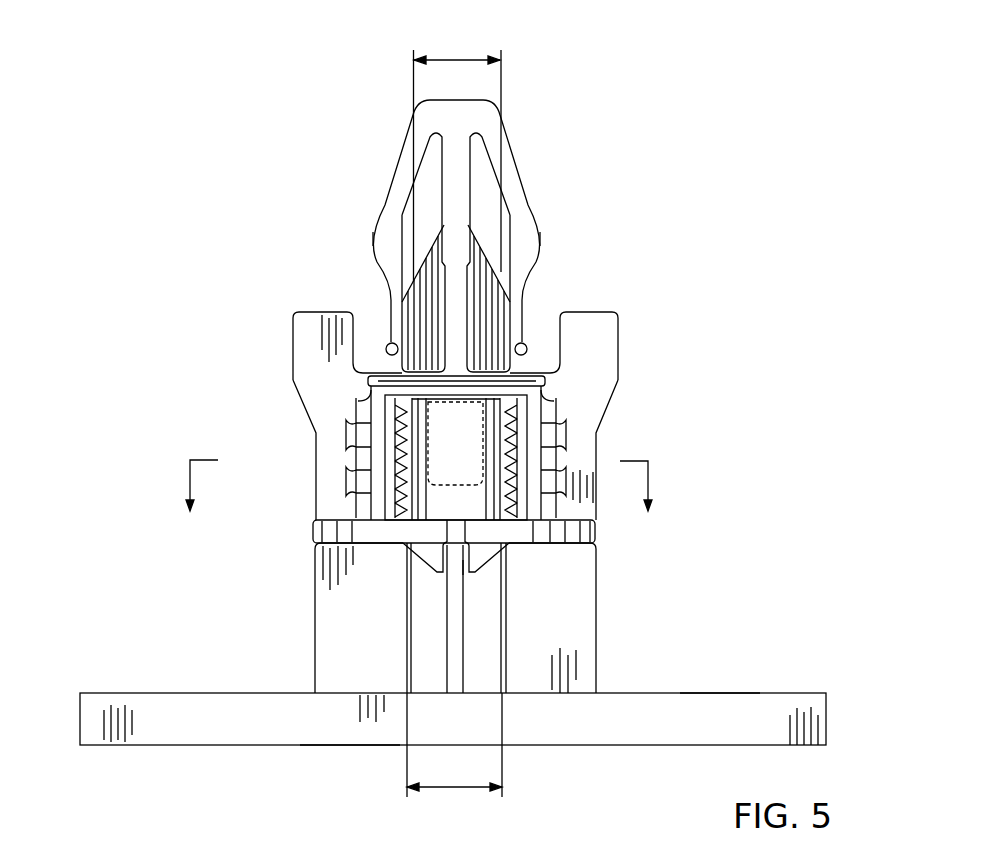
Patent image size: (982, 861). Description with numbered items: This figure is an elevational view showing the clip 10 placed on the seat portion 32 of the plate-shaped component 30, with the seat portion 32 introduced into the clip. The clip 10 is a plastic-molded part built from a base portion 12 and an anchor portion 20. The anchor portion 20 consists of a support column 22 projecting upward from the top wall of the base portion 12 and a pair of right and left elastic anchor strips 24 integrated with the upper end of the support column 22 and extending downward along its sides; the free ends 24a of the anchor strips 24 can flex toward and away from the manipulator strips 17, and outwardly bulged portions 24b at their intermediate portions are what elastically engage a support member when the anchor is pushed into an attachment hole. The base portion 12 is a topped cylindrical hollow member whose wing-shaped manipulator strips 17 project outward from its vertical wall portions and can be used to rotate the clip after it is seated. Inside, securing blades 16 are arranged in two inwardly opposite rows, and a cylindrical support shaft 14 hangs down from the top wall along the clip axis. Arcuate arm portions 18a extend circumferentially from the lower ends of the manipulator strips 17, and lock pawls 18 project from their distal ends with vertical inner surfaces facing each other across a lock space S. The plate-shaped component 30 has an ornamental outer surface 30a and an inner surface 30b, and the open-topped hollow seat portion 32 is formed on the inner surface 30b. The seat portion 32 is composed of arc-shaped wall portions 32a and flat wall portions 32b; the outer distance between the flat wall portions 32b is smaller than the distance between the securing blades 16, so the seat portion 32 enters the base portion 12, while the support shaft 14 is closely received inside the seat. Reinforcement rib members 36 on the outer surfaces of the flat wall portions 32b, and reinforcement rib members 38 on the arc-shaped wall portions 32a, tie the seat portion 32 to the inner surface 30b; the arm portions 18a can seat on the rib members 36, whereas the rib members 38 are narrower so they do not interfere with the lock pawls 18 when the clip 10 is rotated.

The clip 10 is at (323, 150).
The anchor portion 20 is at (547, 174).
The elastic anchor strips 24 is at (392, 217).
The free ends of the anchor strips 24a is at (386, 344).
The bulged portions 24b is at (370, 240).
The support column 22 is at (455, 292).
The manipulator strips 17 is at (308, 340).
The seat portion 32 is at (294, 557).
The arc-shaped wall portions 32a is at (430, 497).
The flat wall portions 32b is at (378, 410).
The base portion 12 is at (402, 404).
The support shaft 14 is at (450, 452).
The arm portions 18a is at (347, 530).
The reinforcement rib members 36 is at (333, 661).
The securing blades 16 is at (403, 523).
The lock pawls 18 is at (433, 562).
The reinforcement rib members 38 is at (457, 670).
The lock space S is at (463, 563).
The plate-shaped component 30 is at (160, 728).
The outer surface 30a is at (353, 746).
The inner surface 30b is at (707, 693).